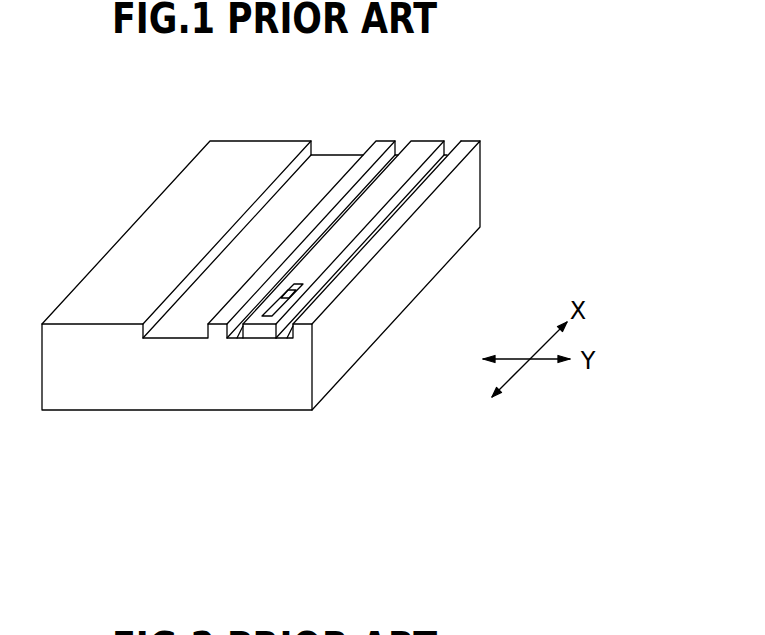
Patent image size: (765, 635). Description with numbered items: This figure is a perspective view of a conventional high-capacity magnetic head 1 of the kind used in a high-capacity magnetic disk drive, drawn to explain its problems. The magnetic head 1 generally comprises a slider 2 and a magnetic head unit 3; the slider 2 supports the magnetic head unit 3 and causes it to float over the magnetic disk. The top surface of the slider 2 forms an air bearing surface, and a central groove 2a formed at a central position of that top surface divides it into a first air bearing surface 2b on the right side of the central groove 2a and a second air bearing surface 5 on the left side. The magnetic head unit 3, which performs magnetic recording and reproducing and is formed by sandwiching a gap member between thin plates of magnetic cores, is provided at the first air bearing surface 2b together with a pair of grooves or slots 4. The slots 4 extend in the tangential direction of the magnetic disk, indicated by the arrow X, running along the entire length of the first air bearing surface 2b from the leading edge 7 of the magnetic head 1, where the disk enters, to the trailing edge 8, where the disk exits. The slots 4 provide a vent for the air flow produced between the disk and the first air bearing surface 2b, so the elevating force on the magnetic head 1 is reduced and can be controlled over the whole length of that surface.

The magnetic head 1 is at (165, 99).
The slider 2 is at (492, 197).
The central groove 2a is at (332, 170).
The first air bearing surface 2b is at (323, 253).
The magnetic head unit 3 is at (305, 289).
The slots 4 is at (237, 338).
The second air bearing surface 5 is at (141, 229).
The leading edge 7 is at (425, 143).
The trailing edge 8 is at (262, 330).